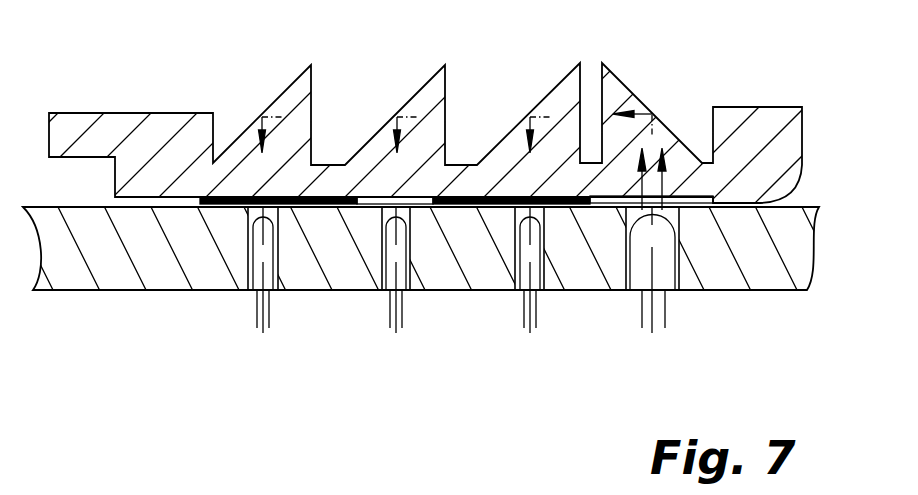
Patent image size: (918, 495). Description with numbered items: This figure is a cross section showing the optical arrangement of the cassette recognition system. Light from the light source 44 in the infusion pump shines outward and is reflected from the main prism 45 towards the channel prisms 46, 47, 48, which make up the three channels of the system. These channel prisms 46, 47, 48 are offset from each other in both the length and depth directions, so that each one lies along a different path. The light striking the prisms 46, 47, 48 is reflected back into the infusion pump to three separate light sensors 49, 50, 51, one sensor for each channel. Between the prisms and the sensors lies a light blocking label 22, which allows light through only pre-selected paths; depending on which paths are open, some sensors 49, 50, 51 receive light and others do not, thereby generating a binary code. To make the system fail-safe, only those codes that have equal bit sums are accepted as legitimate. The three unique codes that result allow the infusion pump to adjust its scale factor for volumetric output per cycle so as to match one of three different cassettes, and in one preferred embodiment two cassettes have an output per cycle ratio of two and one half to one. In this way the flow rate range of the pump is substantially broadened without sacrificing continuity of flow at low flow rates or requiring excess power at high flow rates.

The light blocking label 22 is at (205, 205).
The light source 44 is at (662, 265).
The main prism 45 is at (653, 118).
The channel prism 46 is at (530, 116).
The channel prism 47 is at (397, 116).
The channel prism 48 is at (262, 116).
The light sensor 49 is at (532, 258).
The light sensor 50 is at (398, 259).
The light sensor 51 is at (264, 261).